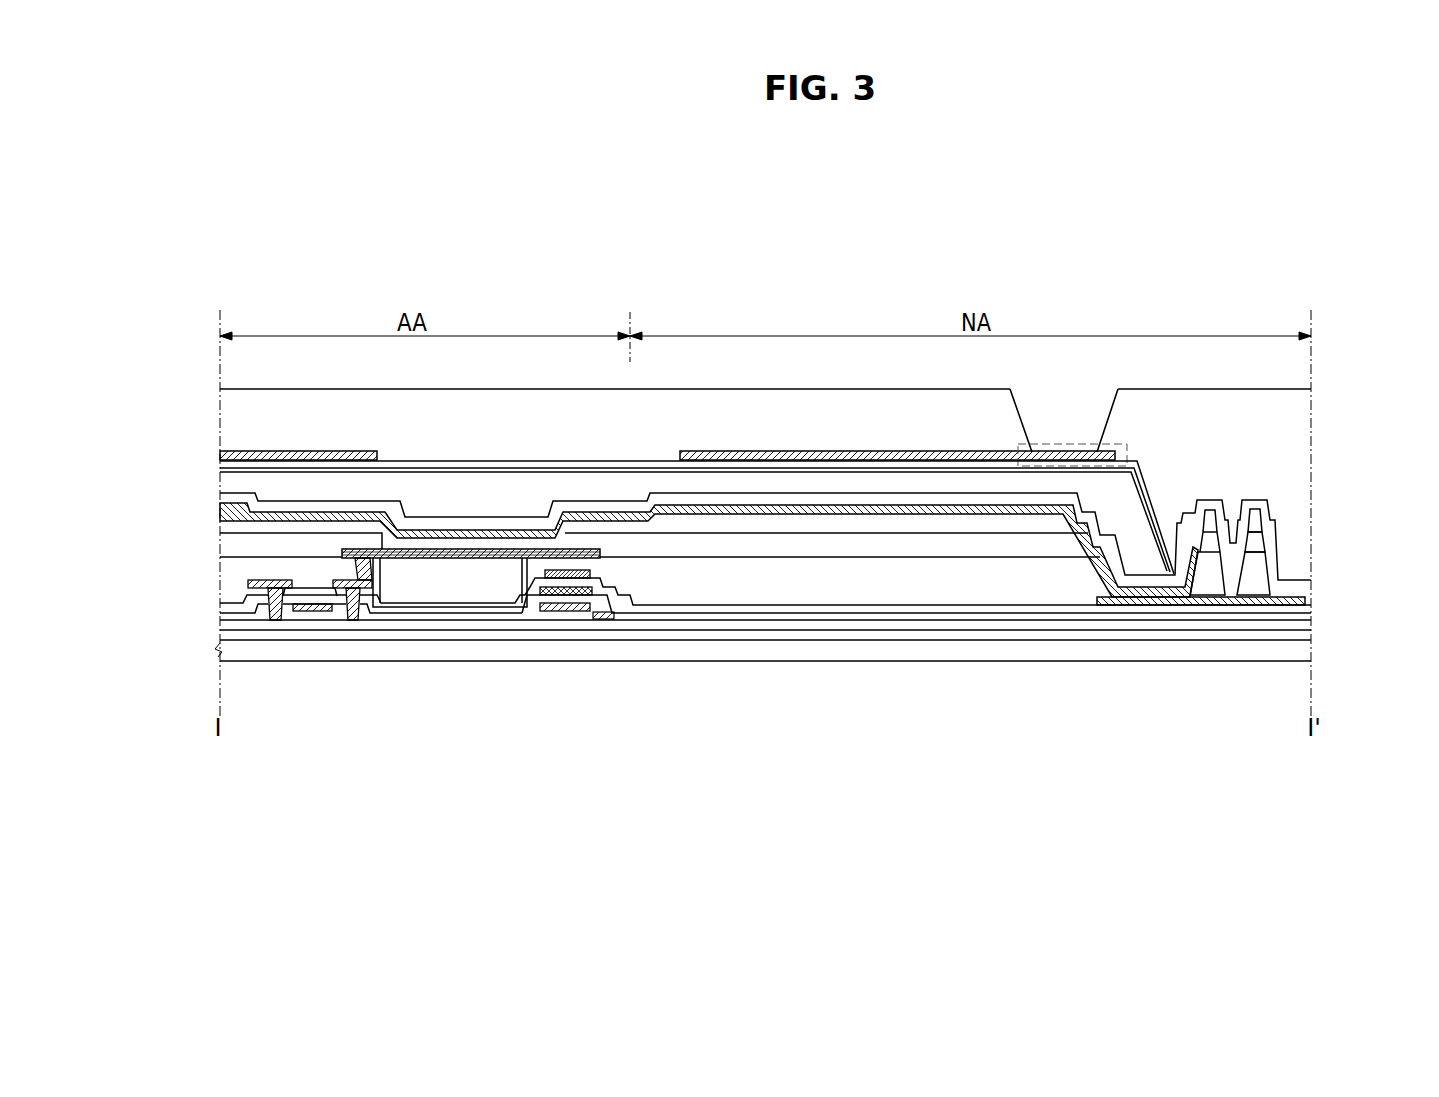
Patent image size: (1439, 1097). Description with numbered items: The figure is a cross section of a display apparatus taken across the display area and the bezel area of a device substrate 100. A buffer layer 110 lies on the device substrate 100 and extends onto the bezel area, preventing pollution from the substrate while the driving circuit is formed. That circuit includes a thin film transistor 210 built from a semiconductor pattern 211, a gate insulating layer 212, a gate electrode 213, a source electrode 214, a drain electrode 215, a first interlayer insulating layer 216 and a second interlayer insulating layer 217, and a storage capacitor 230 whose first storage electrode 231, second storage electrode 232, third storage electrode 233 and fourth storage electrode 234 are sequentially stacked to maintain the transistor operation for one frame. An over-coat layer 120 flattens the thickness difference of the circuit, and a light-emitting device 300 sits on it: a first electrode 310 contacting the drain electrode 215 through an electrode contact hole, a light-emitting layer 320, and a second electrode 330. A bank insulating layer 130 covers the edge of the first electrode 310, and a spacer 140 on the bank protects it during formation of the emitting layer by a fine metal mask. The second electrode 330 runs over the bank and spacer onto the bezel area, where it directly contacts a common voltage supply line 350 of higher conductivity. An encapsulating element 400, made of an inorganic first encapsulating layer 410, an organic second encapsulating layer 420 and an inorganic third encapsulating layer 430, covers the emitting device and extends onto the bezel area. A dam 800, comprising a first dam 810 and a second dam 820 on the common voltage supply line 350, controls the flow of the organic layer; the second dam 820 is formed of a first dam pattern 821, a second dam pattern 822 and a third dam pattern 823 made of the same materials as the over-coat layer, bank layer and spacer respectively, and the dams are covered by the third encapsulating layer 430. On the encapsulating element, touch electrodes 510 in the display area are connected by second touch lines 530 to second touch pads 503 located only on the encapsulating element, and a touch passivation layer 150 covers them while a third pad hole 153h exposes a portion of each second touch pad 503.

The device substrate 100 is at (1302, 657).
The buffer layer 110 is at (1302, 630).
The over-coat layer 120 is at (225, 589).
The bank insulating layer 130 is at (855, 545).
The spacer 140 is at (950, 526).
The touch passivation layer 150 is at (1298, 443).
The third pad hole 153h is at (1115, 406).
The thin film transistor 210 is at (765, 663).
The semiconductor pattern 211 is at (283, 618).
The gate insulating layer 212 is at (383, 612).
The gate electrode 213 is at (332, 612).
The source electrode 214 is at (257, 618).
The drain electrode 215 is at (356, 618).
The first interlayer insulating layer 216 is at (413, 612).
The second interlayer insulating layer 217 is at (414, 637).
The storage capacitor 230 is at (606, 669).
The first storage electrode 231 is at (560, 612).
The second storage electrode 232 is at (612, 616).
The third storage electrode 233 is at (583, 596).
The fourth storage electrode 234 is at (578, 579).
The light-emitting device 300 is at (471, 688).
The first electrode 310 is at (466, 563).
The light-emitting layer 320 is at (495, 566).
The second electrode 330 is at (520, 568).
The common voltage supply line 350 is at (1136, 605).
The encapsulating element 400 is at (709, 524).
The first encapsulating layer 410 is at (683, 550).
The second encapsulating layer 420 is at (222, 494).
The third encapsulating layer 430 is at (222, 464).
The second touch pad 503 is at (1035, 466).
The touch electrode 510 is at (220, 455).
The second touch line 530 is at (767, 458).
The dam 800 is at (1310, 633).
The first dam 810 is at (1200, 598).
The second dam 820 is at (1333, 607).
The first dam pattern 821 is at (1263, 566).
The second dam pattern 822 is at (1262, 535).
The third dam pattern 823 is at (1262, 507).